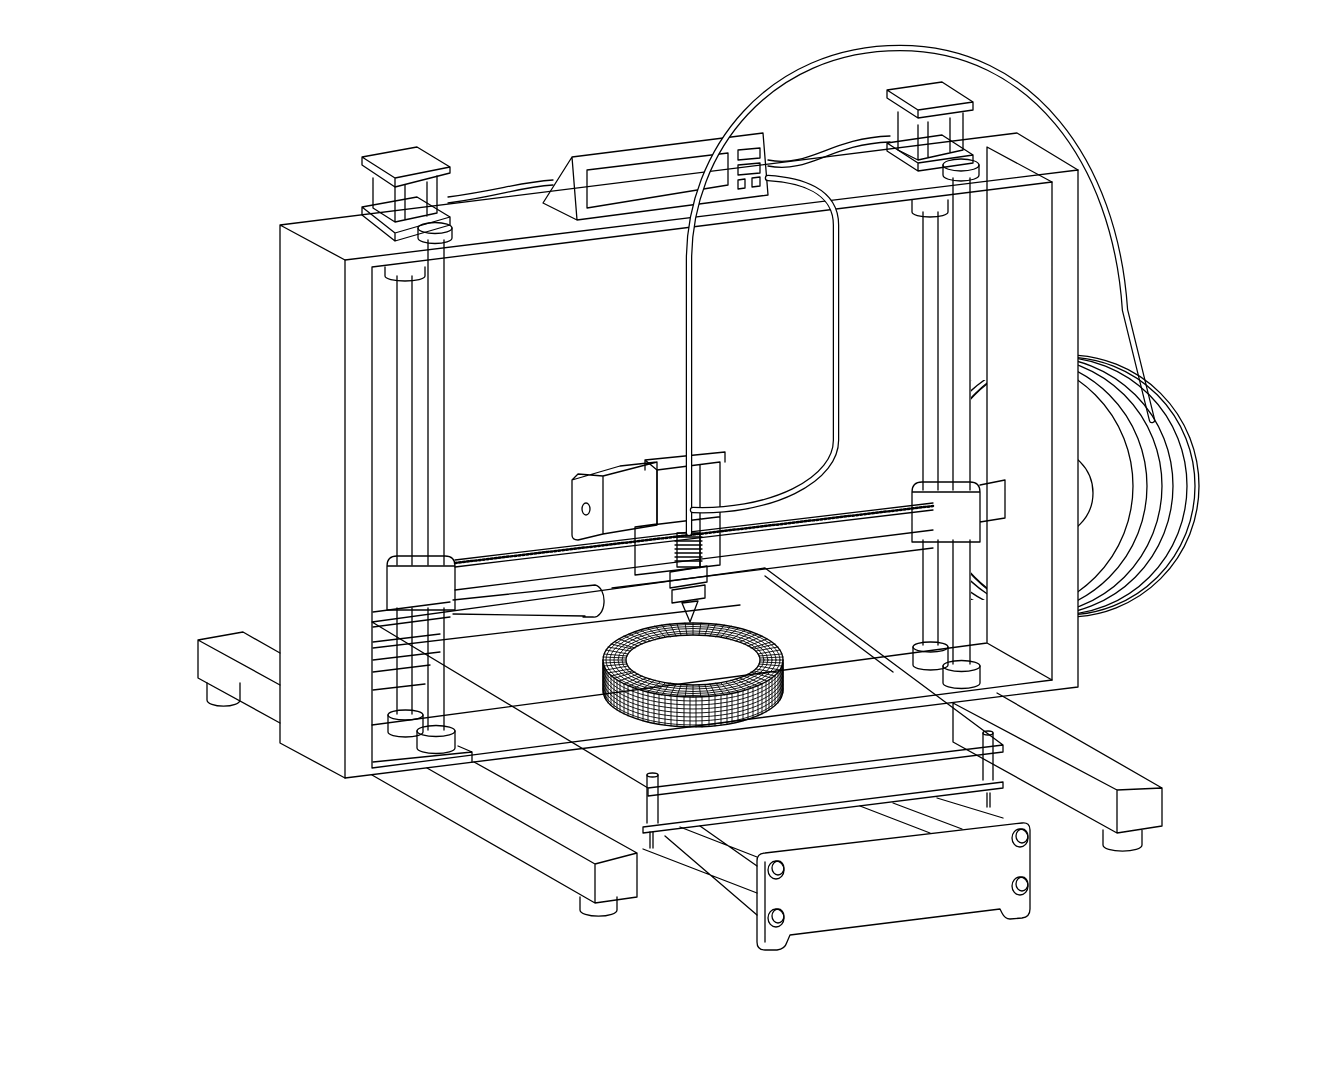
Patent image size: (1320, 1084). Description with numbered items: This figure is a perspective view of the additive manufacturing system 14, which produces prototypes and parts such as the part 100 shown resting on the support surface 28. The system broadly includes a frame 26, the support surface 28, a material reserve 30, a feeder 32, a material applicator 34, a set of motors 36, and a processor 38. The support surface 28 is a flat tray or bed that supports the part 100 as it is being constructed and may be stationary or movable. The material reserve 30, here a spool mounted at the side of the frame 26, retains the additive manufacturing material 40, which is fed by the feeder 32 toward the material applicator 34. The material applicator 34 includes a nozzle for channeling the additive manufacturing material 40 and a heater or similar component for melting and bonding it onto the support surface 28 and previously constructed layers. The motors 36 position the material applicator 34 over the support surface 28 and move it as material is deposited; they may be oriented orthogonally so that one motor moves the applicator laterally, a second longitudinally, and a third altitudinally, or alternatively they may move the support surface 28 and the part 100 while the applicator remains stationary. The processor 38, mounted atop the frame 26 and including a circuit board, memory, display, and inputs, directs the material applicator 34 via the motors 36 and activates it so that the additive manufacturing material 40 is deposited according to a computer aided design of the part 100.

The additive manufacturing system 14 is at (1176, 86).
The frame 26 is at (226, 470).
The support surface 28 is at (566, 646).
The material reserve 30 is at (1192, 380).
The feeder 32 is at (722, 460).
The material applicator 34 is at (716, 612).
The motors 36 is at (385, 155).
The processor 38 is at (620, 157).
The additive manufacturing material 40 is at (1167, 528).
The part 100 is at (590, 677).